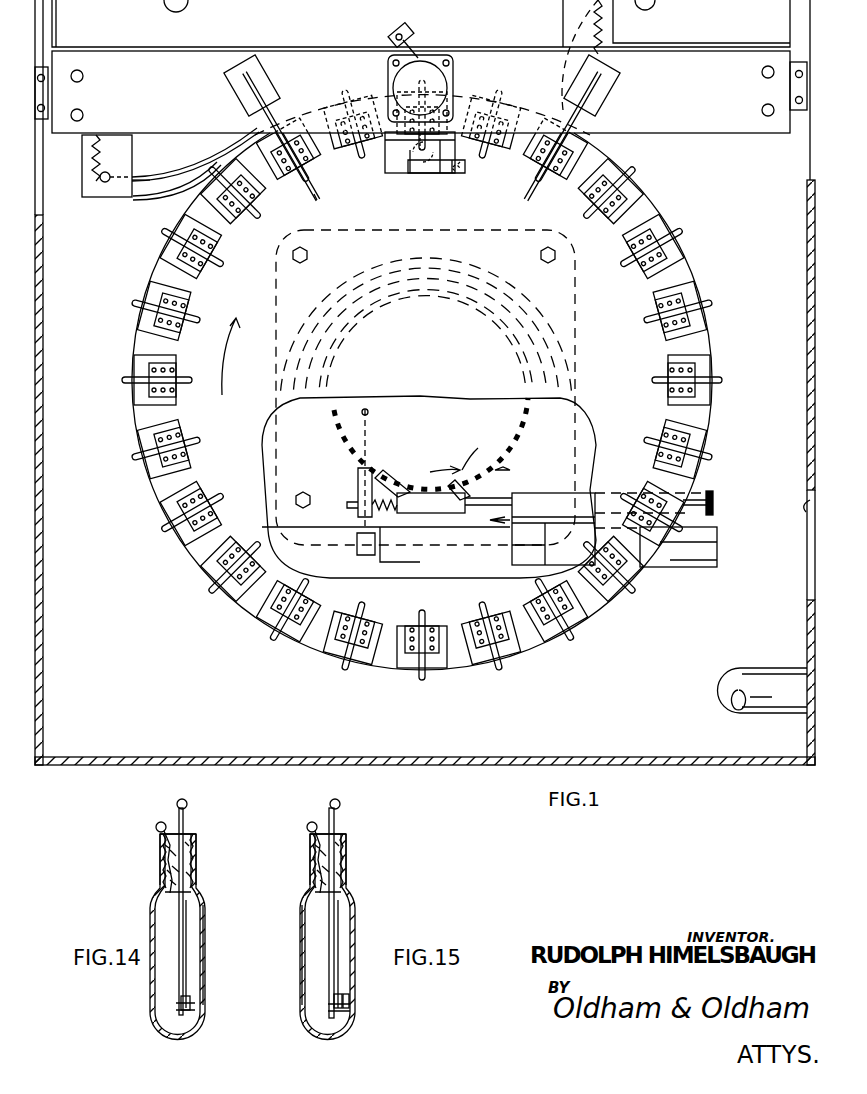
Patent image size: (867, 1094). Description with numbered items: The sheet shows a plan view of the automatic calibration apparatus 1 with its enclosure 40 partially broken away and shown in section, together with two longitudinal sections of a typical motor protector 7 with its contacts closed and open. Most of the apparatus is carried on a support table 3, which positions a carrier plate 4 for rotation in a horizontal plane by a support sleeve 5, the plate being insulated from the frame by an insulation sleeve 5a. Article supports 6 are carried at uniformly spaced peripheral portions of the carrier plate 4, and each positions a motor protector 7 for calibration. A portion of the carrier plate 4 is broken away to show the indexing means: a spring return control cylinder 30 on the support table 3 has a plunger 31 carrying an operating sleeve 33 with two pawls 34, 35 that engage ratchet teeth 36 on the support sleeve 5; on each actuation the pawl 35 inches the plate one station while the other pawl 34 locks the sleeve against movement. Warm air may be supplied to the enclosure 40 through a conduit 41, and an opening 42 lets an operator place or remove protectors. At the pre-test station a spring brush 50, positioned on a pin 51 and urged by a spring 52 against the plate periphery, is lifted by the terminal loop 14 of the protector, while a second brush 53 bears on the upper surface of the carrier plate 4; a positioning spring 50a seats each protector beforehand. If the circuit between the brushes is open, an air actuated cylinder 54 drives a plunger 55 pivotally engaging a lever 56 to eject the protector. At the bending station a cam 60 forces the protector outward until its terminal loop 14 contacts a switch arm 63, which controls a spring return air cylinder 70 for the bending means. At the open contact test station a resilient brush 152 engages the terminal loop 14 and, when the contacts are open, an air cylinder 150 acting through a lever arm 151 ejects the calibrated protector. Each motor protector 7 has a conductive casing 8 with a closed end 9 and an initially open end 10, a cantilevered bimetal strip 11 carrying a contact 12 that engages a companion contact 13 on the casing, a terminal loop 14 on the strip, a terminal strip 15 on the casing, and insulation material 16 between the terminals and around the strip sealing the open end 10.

In FIG. 1, the automatic calibration apparatus 1 is at (90, 786).
In FIG. 1, the support table 3 is at (143, 765).
In FIG. 1, the carrier plate 4 is at (690, 268).
In FIG. 1, the support sleeve 5 is at (285, 396).
In FIG. 1, the insulation sleeve 5a is at (282, 332).
In FIG. 1, the article support 6 is at (246, 225).
In FIG. 1, the motor protector 7 is at (129, 375).
In FIG. 14, the motor protector 7 is at (140, 919).
In FIG. 15, the motor protector 7 is at (290, 941).
In FIG. 14, the conductive casing 8 is at (206, 928).
In FIG. 15, the conductive casing 8 is at (302, 955).
In FIG. 14, the closed end 9 is at (176, 1040).
In FIG. 15, the closed end 9 is at (328, 1040).
In FIG. 14, the open end 10 is at (196, 845).
In FIG. 15, the open end 10 is at (348, 845).
In FIG. 14, the bimetal strip 11 is at (188, 958).
In FIG. 15, the bimetal strip 11 is at (340, 920).
In FIG. 14, the contact 12 is at (192, 996).
In FIG. 15, the contact 12 is at (345, 995).
In FIG. 14, the companion contact 13 is at (196, 1006).
In FIG. 15, the companion contact 13 is at (350, 1010).
In FIG. 14, the terminal loop 14 is at (188, 803).
In FIG. 15, the terminal loop 14 is at (340, 803).
In FIG. 14, the terminal strip 15 is at (156, 828).
In FIG. 15, the terminal strip 15 is at (307, 828).
In FIG. 14, the insulation material 16 is at (162, 862).
In FIG. 15, the insulation material 16 is at (340, 836).
In FIG. 1, the control cylinder 30 is at (545, 495).
In FIG. 1, the plunger 31 is at (492, 500).
In FIG. 1, the operating sleeve 33 is at (452, 515).
In FIG. 1, the pawl 34 is at (396, 478).
In FIG. 1, the pawl 35 is at (462, 470).
In FIG. 1, the ratchet teeth 36 is at (333, 437).
In FIG. 1, the enclosure 40 is at (450, 762).
In FIG. 1, the conduit 41 is at (752, 680).
In FIG. 1, the opening 42 is at (806, 500).
In FIG. 1, the spring brush 50 is at (172, 178).
In FIG. 1, the positioning spring 50a is at (172, 196).
In FIG. 1, the pin 51 is at (106, 172).
In FIG. 1, the spring 52 is at (83, 160).
In FIG. 1, the second brush 53 is at (440, 172).
In FIG. 1, the air actuated cylinder 54 is at (262, 88).
In FIG. 1, the plunger 55 is at (270, 114).
In FIG. 1, the lever 56 is at (302, 185).
In FIG. 1, the cam 60 is at (395, 160).
In FIG. 1, the switch arm 63 is at (412, 46).
In FIG. 1, the spring return air cylinder 70 is at (432, 85).
In FIG. 1, the air cylinder 150 is at (605, 90).
In FIG. 1, the lever arm 151 is at (530, 188).
In FIG. 1, the resilient brush 152 is at (560, 78).